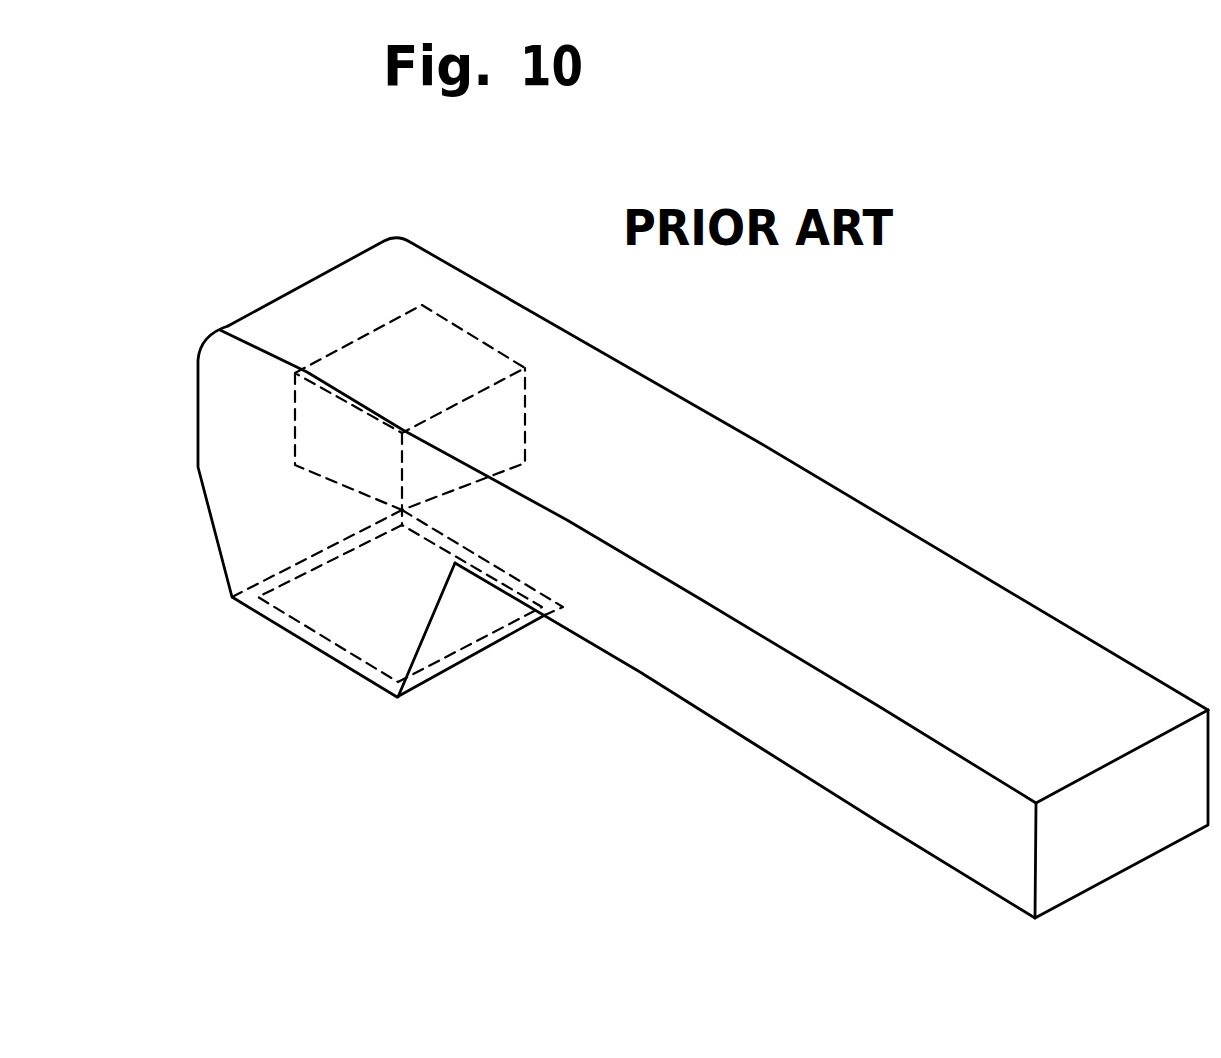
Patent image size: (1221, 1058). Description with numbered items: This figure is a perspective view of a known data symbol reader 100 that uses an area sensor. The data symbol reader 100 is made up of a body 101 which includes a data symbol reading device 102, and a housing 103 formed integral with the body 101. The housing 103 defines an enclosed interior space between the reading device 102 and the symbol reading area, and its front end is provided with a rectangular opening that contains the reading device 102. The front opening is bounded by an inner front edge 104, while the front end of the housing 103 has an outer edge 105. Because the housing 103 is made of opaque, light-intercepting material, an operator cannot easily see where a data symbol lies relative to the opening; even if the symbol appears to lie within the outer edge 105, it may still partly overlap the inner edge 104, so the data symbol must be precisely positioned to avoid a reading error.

The data symbol reader 100 is at (661, 578).
The body 101 is at (882, 512).
The data symbol reading device 102 is at (480, 340).
The housing 103 is at (366, 517).
The front edge 104 is at (288, 628).
The outer edge 105 is at (354, 672).